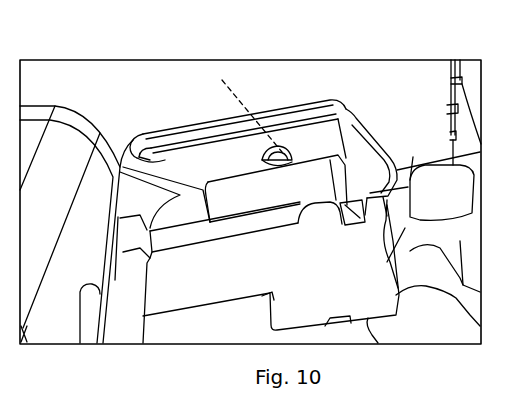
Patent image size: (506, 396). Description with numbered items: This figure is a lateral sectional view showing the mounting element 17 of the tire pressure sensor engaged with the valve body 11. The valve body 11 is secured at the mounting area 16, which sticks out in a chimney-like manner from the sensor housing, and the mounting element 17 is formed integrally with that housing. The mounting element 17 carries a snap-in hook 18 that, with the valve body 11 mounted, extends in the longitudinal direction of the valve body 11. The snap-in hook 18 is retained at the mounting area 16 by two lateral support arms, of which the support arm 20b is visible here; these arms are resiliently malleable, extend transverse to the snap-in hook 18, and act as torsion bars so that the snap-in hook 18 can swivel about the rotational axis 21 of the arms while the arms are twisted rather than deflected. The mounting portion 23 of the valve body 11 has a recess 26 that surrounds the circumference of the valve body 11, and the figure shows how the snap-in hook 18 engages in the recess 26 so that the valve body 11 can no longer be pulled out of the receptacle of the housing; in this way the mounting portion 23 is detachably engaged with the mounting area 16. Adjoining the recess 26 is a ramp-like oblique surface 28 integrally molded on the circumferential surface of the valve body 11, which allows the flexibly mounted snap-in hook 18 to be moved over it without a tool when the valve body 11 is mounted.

The valve body 11 is at (438, 88).
The mounting area 16 is at (208, 118).
The mounting element 17 is at (320, 183).
The snap-in hook 18 is at (346, 195).
The support arm 20b is at (276, 152).
The rotational axis 21 is at (210, 72).
The mounting portion 23 is at (202, 290).
The recess 26 is at (353, 223).
The ramp-like oblique surface 28 is at (317, 212).